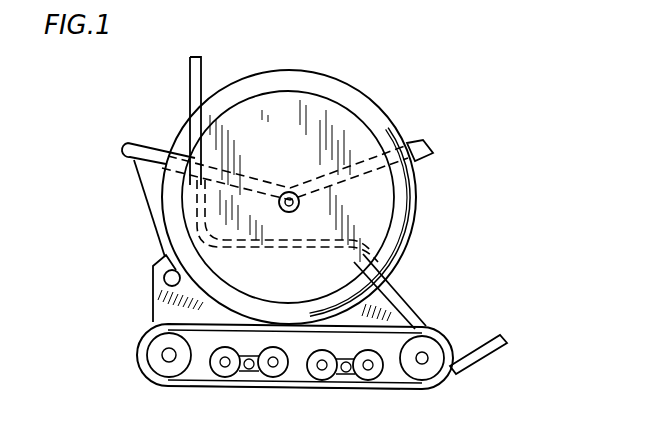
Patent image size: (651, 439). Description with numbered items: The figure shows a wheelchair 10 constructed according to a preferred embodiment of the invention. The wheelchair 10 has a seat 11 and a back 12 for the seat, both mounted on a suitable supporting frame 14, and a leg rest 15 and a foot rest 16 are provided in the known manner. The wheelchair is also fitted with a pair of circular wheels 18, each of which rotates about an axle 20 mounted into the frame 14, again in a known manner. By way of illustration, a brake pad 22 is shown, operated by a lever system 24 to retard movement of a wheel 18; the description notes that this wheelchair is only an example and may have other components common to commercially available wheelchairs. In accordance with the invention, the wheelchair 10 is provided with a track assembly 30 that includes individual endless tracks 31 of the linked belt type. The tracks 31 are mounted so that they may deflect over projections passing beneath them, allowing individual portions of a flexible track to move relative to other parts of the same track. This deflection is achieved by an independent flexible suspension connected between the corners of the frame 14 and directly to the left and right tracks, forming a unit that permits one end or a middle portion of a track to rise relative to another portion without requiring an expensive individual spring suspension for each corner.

The wheelchair 10 is at (398, 95).
The seat 11 is at (265, 206).
The back 12 is at (201, 68).
The supporting frame 14 is at (400, 292).
The leg rest 15 is at (414, 318).
The foot rest 16 is at (503, 336).
The circular wheel 18 is at (314, 80).
The axle 20 is at (288, 192).
The brake pad 22 is at (166, 279).
The lever system 24 is at (420, 146).
The track assembly 30 is at (128, 350).
The endless track 31 is at (192, 391).